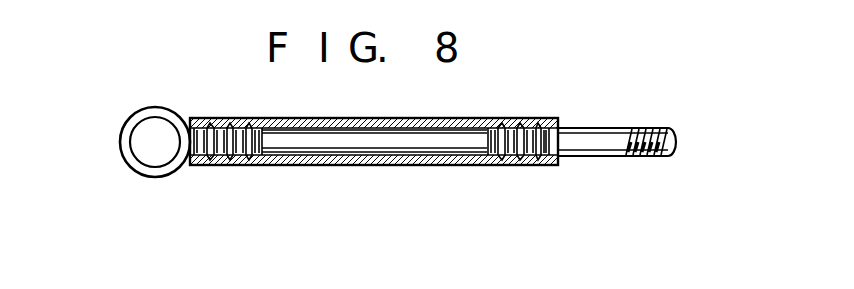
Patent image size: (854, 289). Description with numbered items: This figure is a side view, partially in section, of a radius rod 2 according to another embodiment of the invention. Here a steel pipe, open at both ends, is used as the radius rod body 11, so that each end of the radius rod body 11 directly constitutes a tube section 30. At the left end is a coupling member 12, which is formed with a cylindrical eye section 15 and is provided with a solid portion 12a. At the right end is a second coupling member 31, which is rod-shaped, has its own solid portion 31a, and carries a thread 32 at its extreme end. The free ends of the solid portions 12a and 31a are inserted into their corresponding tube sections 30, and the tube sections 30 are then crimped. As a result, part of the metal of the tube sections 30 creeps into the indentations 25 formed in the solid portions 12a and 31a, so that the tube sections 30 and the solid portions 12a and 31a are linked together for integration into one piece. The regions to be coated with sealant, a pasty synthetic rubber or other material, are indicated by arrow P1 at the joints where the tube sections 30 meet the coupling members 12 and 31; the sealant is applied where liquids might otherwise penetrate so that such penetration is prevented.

The connector assembly 2 is at (374, 143).
The radius rod body 11 is at (372, 165).
The coupling member 12 is at (155, 106).
The solid portion 12a is at (268, 147).
The eye section 15 is at (123, 126).
The indentations 25 is at (243, 160).
The tube section 30 is at (218, 120).
The coupling member 31 is at (623, 121).
The solid portion 31a is at (483, 145).
The thread 32 is at (637, 157).
The arrow P1 is at (200, 165).